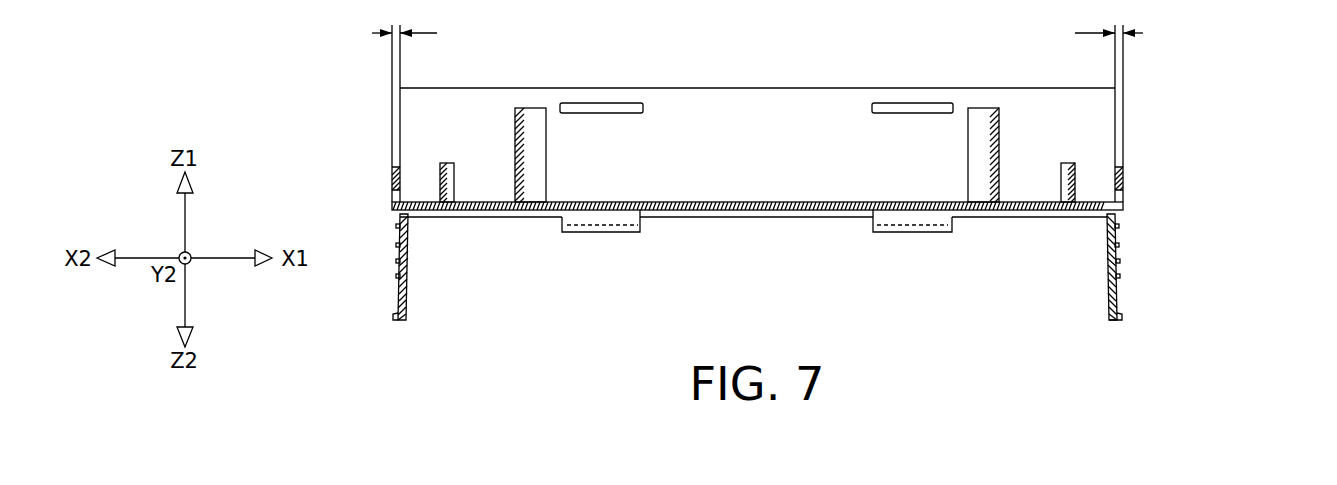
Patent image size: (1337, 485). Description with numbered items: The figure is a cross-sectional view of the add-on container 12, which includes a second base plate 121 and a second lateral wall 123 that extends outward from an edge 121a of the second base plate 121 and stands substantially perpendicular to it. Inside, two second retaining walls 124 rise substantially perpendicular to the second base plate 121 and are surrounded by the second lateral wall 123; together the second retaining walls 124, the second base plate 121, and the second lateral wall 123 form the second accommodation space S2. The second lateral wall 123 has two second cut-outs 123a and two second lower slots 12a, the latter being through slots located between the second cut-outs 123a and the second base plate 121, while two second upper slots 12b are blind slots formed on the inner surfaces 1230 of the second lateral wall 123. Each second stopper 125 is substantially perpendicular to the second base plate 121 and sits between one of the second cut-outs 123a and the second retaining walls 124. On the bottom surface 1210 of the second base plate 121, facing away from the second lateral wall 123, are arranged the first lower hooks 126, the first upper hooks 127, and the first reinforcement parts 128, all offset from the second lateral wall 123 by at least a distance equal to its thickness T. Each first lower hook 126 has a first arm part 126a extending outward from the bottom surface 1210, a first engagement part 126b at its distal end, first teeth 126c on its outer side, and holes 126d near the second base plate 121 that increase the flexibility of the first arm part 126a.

The add-on container 12 is at (1282, 78).
The second lower slot 12a is at (388, 196).
The second upper slot 12b is at (603, 108).
The second base plate 121 is at (840, 207).
The edge of second base plate 121a is at (386, 218).
The bottom surface of second base plate 1210 is at (781, 212).
The second lateral wall 123 is at (760, 112).
The second cut-out 123a is at (390, 124).
The inner surface of second lateral wall 1230 is at (455, 116).
The second retaining wall 124 is at (512, 162).
The second stopper 125 is at (440, 174).
The first lower hook 126 is at (420, 297).
The first arm part 126a is at (410, 268).
The first engagement part 126b is at (394, 318).
The first teeth 126c is at (396, 226).
The hole 126d is at (412, 213).
The first upper hook 127 is at (609, 236).
The first reinforcement part 128 is at (508, 218).
The second accommodation space S2 is at (820, 163).
The thickness T is at (755, 23).